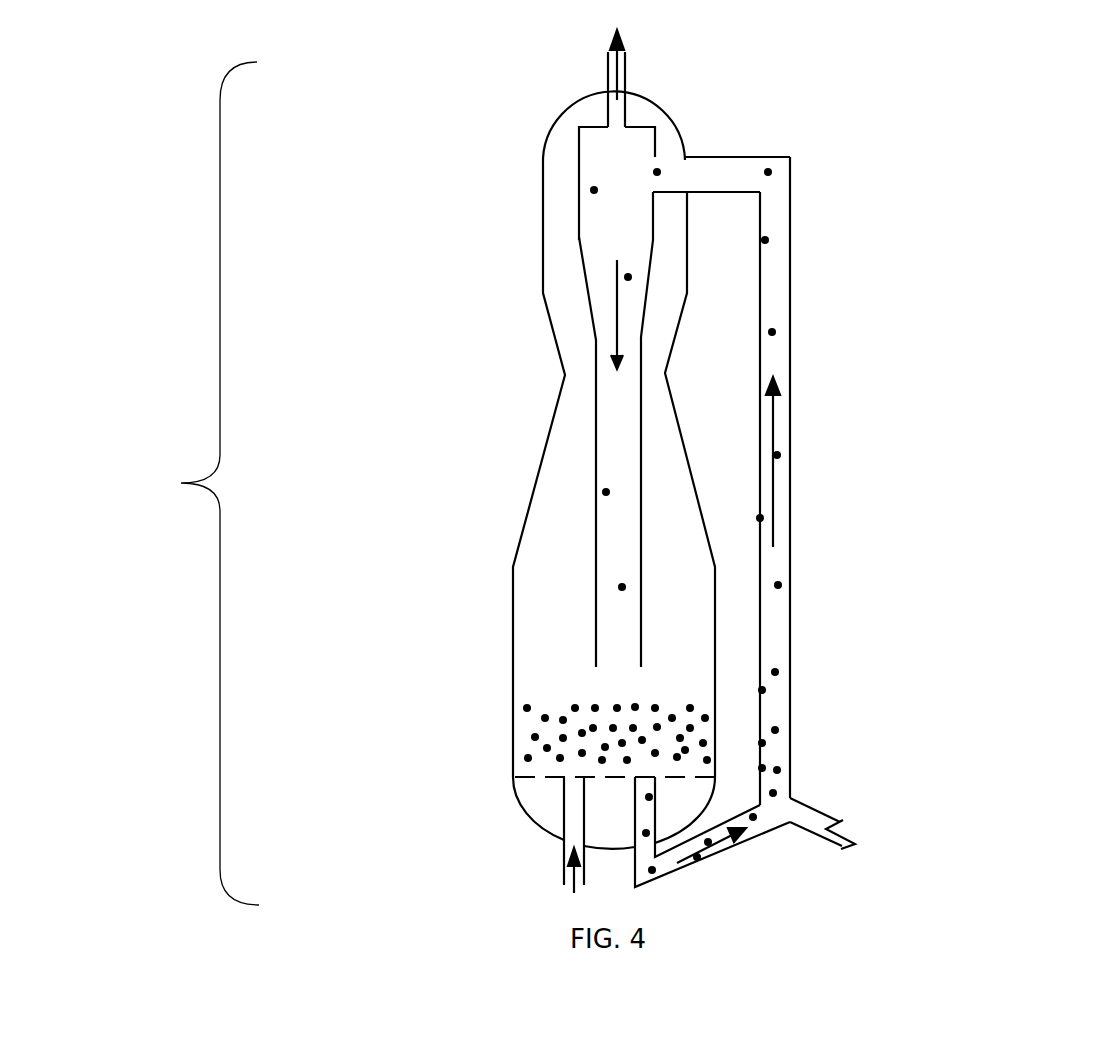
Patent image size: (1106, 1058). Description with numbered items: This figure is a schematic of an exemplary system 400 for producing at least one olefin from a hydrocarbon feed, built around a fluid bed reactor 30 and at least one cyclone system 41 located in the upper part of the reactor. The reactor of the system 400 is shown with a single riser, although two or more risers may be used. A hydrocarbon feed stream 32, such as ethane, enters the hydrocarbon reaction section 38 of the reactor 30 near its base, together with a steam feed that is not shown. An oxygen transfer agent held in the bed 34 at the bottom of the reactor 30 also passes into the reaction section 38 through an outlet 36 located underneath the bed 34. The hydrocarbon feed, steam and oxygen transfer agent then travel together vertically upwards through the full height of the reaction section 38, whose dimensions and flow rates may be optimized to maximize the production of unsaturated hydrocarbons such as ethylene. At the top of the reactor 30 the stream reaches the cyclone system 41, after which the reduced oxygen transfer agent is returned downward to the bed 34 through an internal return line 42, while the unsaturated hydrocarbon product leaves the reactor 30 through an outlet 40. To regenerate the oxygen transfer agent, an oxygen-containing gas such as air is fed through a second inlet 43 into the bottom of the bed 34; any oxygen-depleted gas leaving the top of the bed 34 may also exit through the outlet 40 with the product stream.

The system 400 is at (186, 483).
The fluid bed reactor 30 is at (548, 445).
The hydrocarbon feed stream 32 is at (852, 831).
The bed 34 is at (563, 738).
The outlet 36 is at (653, 777).
The hydrocarbon reaction section 38 is at (791, 553).
The outlet 40 is at (628, 50).
The cyclone system 41 is at (596, 178).
The internal return line 42 is at (592, 288).
The second inlet 43 is at (563, 870).